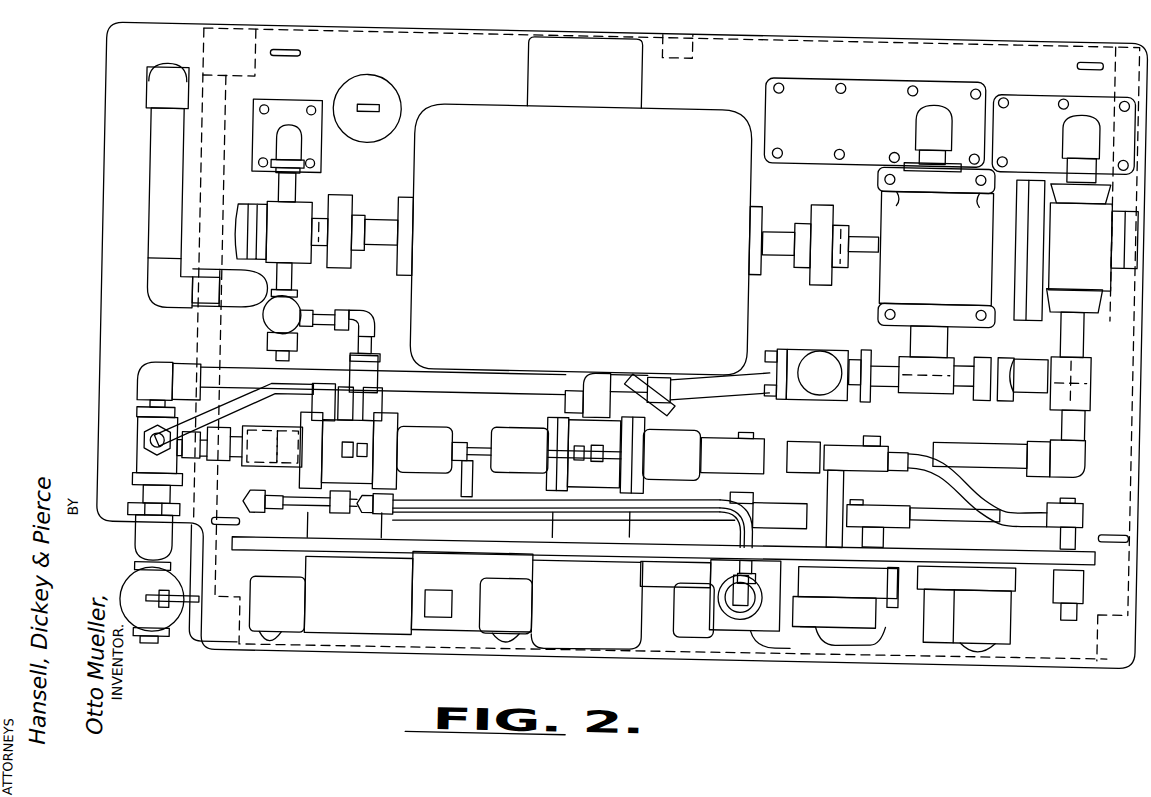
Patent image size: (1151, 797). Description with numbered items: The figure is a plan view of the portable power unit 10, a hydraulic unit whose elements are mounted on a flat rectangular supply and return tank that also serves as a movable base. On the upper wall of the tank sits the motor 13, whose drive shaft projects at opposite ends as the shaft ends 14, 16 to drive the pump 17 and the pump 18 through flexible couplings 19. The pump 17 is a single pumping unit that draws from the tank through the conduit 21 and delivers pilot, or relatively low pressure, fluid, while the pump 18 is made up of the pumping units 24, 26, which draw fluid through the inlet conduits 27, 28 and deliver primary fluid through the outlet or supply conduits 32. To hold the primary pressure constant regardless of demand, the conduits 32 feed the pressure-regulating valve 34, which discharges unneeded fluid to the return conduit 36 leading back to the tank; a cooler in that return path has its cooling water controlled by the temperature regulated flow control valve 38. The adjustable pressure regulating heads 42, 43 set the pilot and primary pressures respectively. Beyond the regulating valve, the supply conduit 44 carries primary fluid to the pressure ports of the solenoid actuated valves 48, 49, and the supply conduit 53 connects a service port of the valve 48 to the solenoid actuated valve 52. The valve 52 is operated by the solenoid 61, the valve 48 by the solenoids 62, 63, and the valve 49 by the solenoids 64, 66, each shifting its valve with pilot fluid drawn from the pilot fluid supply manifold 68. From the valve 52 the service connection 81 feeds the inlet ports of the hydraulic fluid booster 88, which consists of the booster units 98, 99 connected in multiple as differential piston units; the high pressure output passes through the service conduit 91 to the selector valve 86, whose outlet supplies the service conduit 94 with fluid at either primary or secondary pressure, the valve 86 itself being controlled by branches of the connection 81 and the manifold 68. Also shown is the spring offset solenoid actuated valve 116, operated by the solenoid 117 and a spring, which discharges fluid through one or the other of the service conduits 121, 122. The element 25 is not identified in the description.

The portable power unit 10 is at (588, 345).
The motor 13 is at (580, 205).
The drive shaft end 14 is at (401, 214).
The drive shaft end 16 is at (820, 231).
The pump 17 is at (297, 213).
The pump 18 is at (1022, 225).
The flexible couplings 19 is at (580, 222).
The conduit 21 is at (308, 136).
The pumping unit 24 is at (1092, 271).
The stem 25 is at (312, 281).
The pumping unit 26 is at (936, 262).
The inlet conduit 27 is at (1084, 126).
The inlet conduit 28 is at (913, 133).
The outlet or supply conduits 32 is at (992, 365).
The pressure-regulating valve 34 is at (806, 360).
The return conduit 36 is at (415, 294).
The temperature regulated flow control valve 38 is at (159, 596).
The adjustable pressure regulating head 42 is at (302, 346).
The adjustable pressure regulating head 43 is at (867, 350).
The supply conduit 44 is at (1009, 442).
The solenoid actuated valve 48 is at (586, 621).
The solenoid actuated valve 49 is at (842, 660).
The solenoid actuated valve 52 is at (357, 617).
The supply conduit 53 is at (321, 310).
The solenoid 61 is at (279, 636).
The solenoid 62 is at (471, 617).
The solenoid 63 is at (676, 621).
The solenoid 64 is at (773, 658).
The solenoid 66 is at (999, 629).
The pilot fluid supply manifold 68 is at (371, 351).
The service connection 81 is at (490, 527).
The selector valve 86 is at (740, 625).
The hydraulic fluid booster 88 is at (532, 440).
The service conduit 91 is at (570, 451).
The service conduit 94 is at (924, 487).
The booster unit 98 is at (242, 434).
The booster unit 99 is at (622, 447).
The spring offset solenoid actuated valve 116 is at (916, 630).
The solenoid 117 is at (844, 598).
The service conduit 121 is at (977, 494).
The service conduit 122 is at (954, 528).